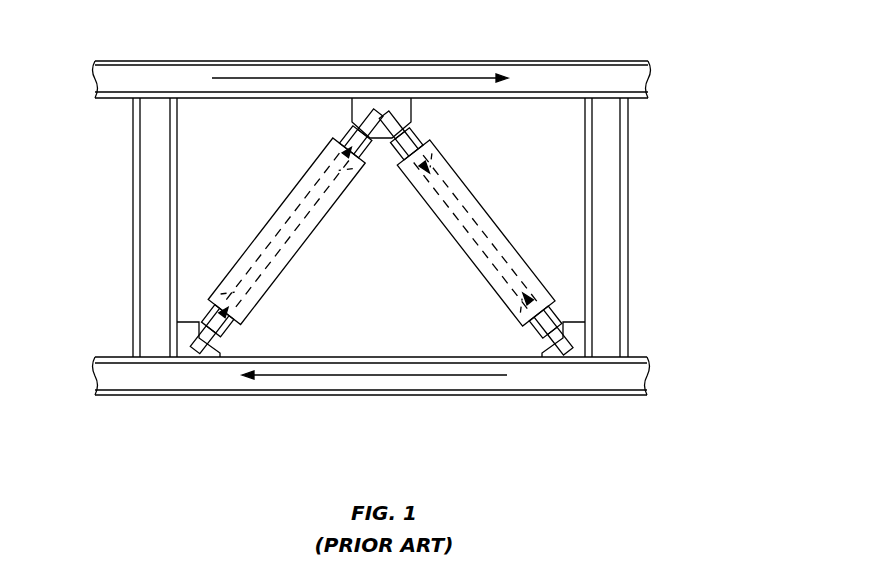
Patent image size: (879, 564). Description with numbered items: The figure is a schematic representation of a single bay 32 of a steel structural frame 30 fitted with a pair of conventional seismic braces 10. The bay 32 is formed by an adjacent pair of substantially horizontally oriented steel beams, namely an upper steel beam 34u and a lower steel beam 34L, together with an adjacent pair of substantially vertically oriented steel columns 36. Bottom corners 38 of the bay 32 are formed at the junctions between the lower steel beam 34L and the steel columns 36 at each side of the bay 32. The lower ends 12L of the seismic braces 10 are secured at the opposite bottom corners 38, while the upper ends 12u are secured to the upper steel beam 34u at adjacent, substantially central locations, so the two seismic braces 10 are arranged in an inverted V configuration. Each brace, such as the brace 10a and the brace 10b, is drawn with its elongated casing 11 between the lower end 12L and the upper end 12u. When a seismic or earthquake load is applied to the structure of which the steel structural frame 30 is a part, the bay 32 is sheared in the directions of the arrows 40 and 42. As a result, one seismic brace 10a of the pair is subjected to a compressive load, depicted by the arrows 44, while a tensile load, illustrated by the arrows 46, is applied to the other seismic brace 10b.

The steel structural frame 30 is at (652, 53).
The seismic braces 10 is at (463, 233).
The seismic brace 10a is at (477, 207).
The seismic brace 10b is at (297, 193).
The brace casing 11 is at (248, 228).
The upper ends 12u is at (352, 135).
The lower ends 12L is at (207, 310).
The bay 32 is at (200, 136).
The upper steel beam 34u is at (527, 79).
The lower steel beam 34L is at (503, 380).
The steel columns 36 is at (150, 240).
The bottom corners 38 is at (577, 357).
The arrow 40 is at (262, 78).
The arrow 42 is at (383, 375).
The arrows 44 is at (413, 165).
The arrows 46 is at (332, 180).